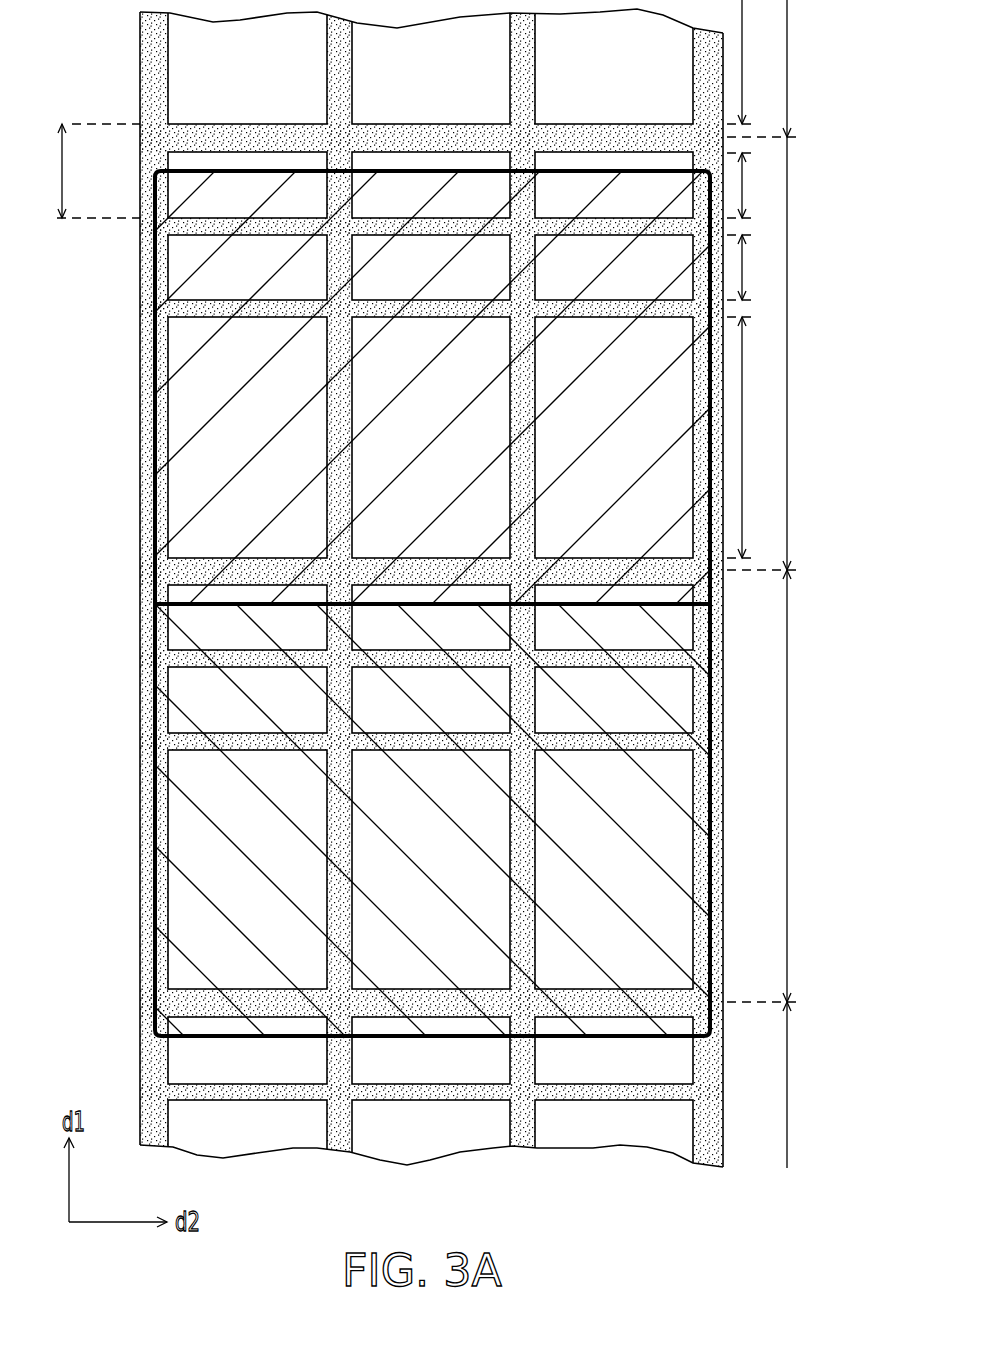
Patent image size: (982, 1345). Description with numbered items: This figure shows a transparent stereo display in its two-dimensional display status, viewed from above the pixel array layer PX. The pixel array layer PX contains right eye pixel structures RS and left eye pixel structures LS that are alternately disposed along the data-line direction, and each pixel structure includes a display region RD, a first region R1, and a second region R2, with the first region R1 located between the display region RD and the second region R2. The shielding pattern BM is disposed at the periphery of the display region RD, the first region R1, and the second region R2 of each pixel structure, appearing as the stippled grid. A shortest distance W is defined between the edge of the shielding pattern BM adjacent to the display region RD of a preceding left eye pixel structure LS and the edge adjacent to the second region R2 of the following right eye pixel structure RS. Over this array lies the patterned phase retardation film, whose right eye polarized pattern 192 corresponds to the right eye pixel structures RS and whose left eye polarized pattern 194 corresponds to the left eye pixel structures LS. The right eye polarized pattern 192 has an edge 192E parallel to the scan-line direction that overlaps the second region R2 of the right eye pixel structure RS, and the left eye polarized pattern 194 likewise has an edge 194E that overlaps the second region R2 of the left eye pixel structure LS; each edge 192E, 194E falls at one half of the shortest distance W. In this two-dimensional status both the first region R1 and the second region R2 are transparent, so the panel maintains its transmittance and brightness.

The shielding pattern BM is at (153, 600).
The right eye polarized pattern 192 is at (155, 310).
The edge of right eye polarized pattern 192E is at (157, 168).
The left eye polarized pattern 194 is at (155, 748).
The edge of left eye polarized pattern 194E is at (166, 590).
The display region RD is at (753, 279).
The first region R1 is at (752, 267).
The second region R2 is at (752, 185).
The left eye pixel structure LS is at (777, 505).
The right eye pixel structure RS is at (807, 652).
The shortest distance W is at (88, 171).
The pixel array layer PX is at (808, 1225).